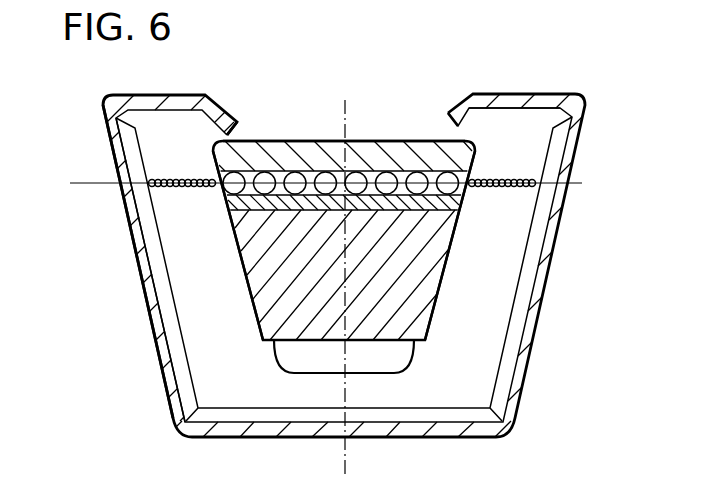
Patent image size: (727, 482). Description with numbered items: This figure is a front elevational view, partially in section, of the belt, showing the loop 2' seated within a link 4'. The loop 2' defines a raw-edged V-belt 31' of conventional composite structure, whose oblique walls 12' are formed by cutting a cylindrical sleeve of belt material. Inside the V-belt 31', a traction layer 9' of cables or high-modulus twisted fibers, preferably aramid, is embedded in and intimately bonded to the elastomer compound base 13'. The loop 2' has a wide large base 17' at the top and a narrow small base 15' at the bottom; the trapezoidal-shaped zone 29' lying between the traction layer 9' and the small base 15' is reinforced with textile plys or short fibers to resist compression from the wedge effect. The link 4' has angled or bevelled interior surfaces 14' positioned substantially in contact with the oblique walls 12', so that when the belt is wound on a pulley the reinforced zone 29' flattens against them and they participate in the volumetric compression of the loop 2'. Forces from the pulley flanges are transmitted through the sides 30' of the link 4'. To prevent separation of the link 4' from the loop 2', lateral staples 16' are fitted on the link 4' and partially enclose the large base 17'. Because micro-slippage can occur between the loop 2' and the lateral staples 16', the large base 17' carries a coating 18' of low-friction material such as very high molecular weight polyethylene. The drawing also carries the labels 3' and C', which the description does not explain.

The loop 2' is at (345, 121).
The pulley 3' is at (356, 261).
The link 4' is at (514, 99).
The traction layer 9' is at (131, 261).
The oblique walls 12' is at (337, 248).
The elastomer compound base 13' is at (141, 270).
The interior surfaces 14' is at (348, 371).
The small base 15' is at (344, 409).
The lateral staples 16' is at (321, 89).
The large base 17' is at (344, 98).
The coating 18' is at (342, 140).
The trapezoidal-shaped zone 29' is at (431, 275).
The sides 30' is at (354, 269).
The V-belt 31' is at (265, 277).
The cord center line C' is at (344, 157).